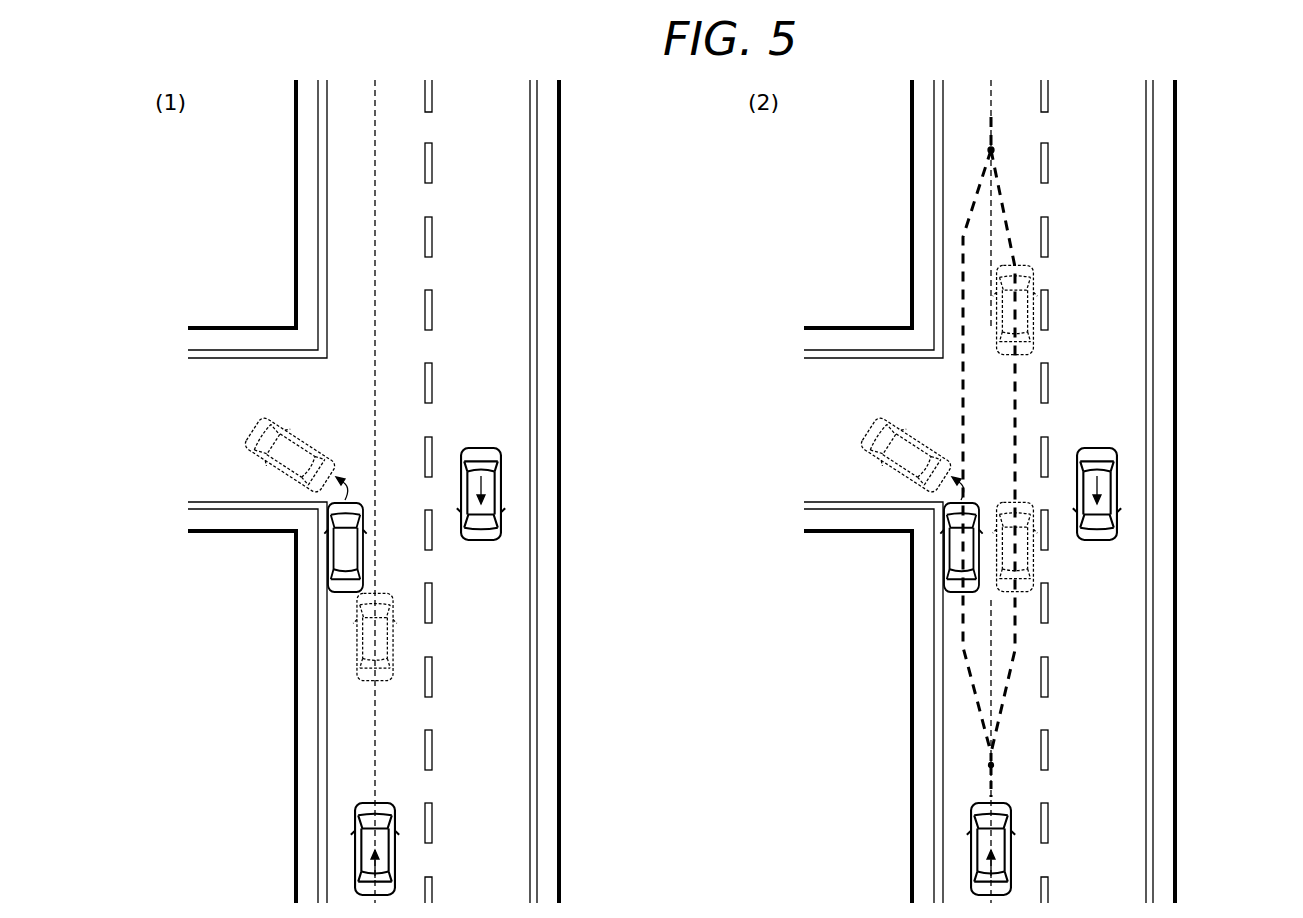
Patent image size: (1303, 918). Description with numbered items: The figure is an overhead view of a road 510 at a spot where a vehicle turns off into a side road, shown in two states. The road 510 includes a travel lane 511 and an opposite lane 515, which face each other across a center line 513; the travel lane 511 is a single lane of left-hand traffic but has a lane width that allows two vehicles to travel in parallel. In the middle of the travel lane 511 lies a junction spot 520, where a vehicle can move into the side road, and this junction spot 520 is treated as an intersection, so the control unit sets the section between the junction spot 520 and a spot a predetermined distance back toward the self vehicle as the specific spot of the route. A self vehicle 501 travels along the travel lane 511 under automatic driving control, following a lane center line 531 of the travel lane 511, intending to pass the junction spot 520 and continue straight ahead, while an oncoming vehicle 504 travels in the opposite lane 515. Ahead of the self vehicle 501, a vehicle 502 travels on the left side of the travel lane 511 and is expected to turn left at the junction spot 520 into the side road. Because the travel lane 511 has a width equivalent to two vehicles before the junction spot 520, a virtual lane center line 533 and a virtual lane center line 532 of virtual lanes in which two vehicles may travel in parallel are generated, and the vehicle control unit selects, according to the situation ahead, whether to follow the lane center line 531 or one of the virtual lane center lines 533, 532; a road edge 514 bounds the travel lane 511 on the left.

The self vehicle 501 is at (392, 853).
The vehicle 502 is at (343, 560).
The oncoming vehicle 504 is at (483, 446).
The road 510 is at (295, 177).
The travel lane 511 is at (342, 785).
The center line 513 is at (433, 675).
The left road shoulder 514 is at (322, 875).
The opposite lane 515 is at (507, 785).
The junction spot 520 is at (225, 533).
The lane center line 531 is at (375, 232).
The virtual lane center line 532 is at (1015, 645).
The virtual lane center line 533 is at (963, 640).